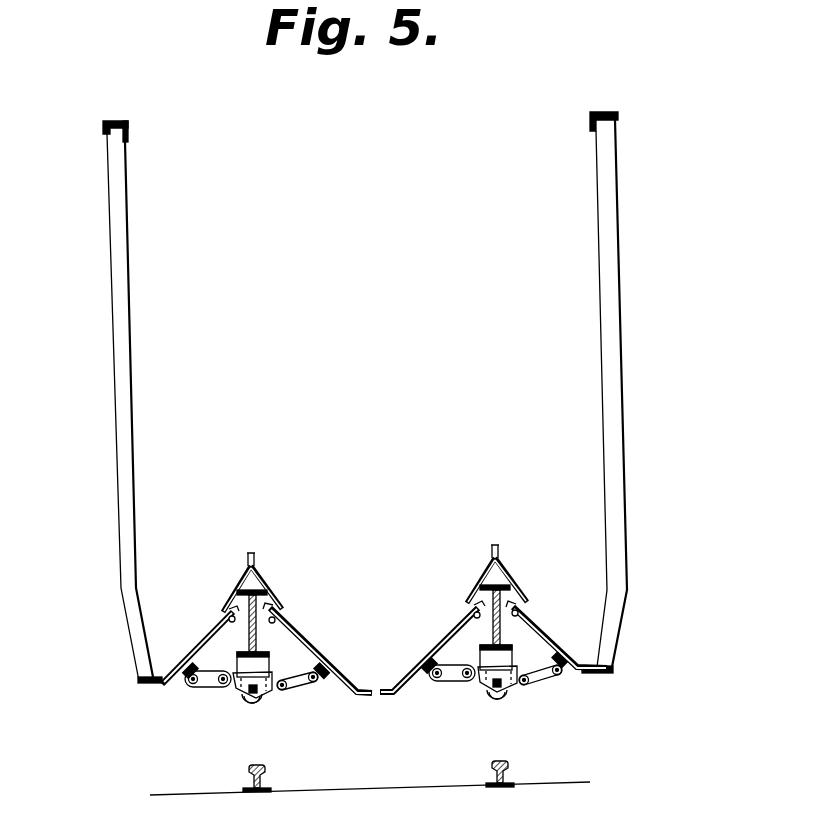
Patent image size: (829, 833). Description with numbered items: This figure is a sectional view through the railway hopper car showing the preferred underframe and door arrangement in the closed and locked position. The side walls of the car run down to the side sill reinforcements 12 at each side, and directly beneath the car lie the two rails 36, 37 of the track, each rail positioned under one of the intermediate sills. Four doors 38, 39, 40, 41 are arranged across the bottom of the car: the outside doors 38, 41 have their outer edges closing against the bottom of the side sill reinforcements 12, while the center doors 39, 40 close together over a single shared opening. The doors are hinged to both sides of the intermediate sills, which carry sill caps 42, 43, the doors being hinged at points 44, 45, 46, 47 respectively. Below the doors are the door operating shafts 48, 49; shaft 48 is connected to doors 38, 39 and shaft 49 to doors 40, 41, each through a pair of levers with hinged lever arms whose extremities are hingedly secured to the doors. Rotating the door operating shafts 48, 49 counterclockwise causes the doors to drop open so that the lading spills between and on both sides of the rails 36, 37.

The side sill reinforcement 12 is at (138, 681).
The rail 36 is at (252, 792).
The rail 37 is at (503, 788).
The door 38 is at (215, 635).
The door 39 is at (304, 630).
The door 40 is at (453, 632).
The door 41 is at (547, 624).
The sill cap 42 is at (257, 560).
The sill cap 43 is at (501, 552).
The hinge point 44 is at (232, 622).
The hinge point 45 is at (272, 623).
The hinge point 46 is at (477, 618).
The hinge point 47 is at (515, 616).
The door operating shaft 48 is at (263, 696).
The door operating shaft 49 is at (507, 693).